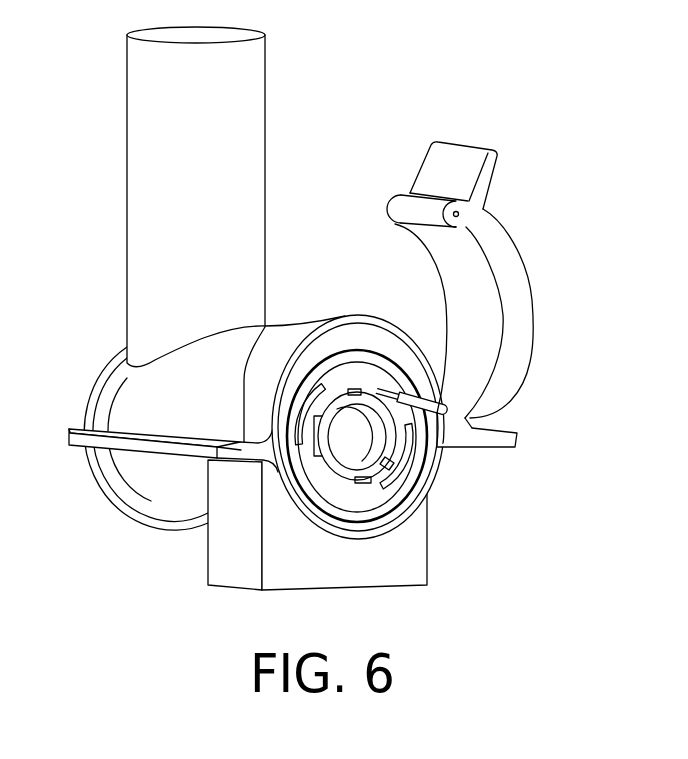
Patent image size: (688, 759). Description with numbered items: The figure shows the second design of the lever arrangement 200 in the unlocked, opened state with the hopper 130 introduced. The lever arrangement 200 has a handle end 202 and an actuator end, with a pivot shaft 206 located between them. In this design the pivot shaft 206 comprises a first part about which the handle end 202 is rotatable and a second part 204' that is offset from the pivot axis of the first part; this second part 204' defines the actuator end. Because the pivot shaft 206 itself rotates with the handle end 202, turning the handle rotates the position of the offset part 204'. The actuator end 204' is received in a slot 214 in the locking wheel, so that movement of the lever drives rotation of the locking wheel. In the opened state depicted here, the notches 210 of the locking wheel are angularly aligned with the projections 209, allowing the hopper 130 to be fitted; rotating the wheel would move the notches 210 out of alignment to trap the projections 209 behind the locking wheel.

The tube 130 is at (127, 200).
The lever arrangement 200 is at (376, 179).
The handle end 202 is at (503, 243).
The second part 204' is at (457, 470).
The pivot shaft 206 is at (452, 414).
The projections 209 is at (385, 470).
The notches 210 is at (337, 392).
The slot 214 is at (386, 386).